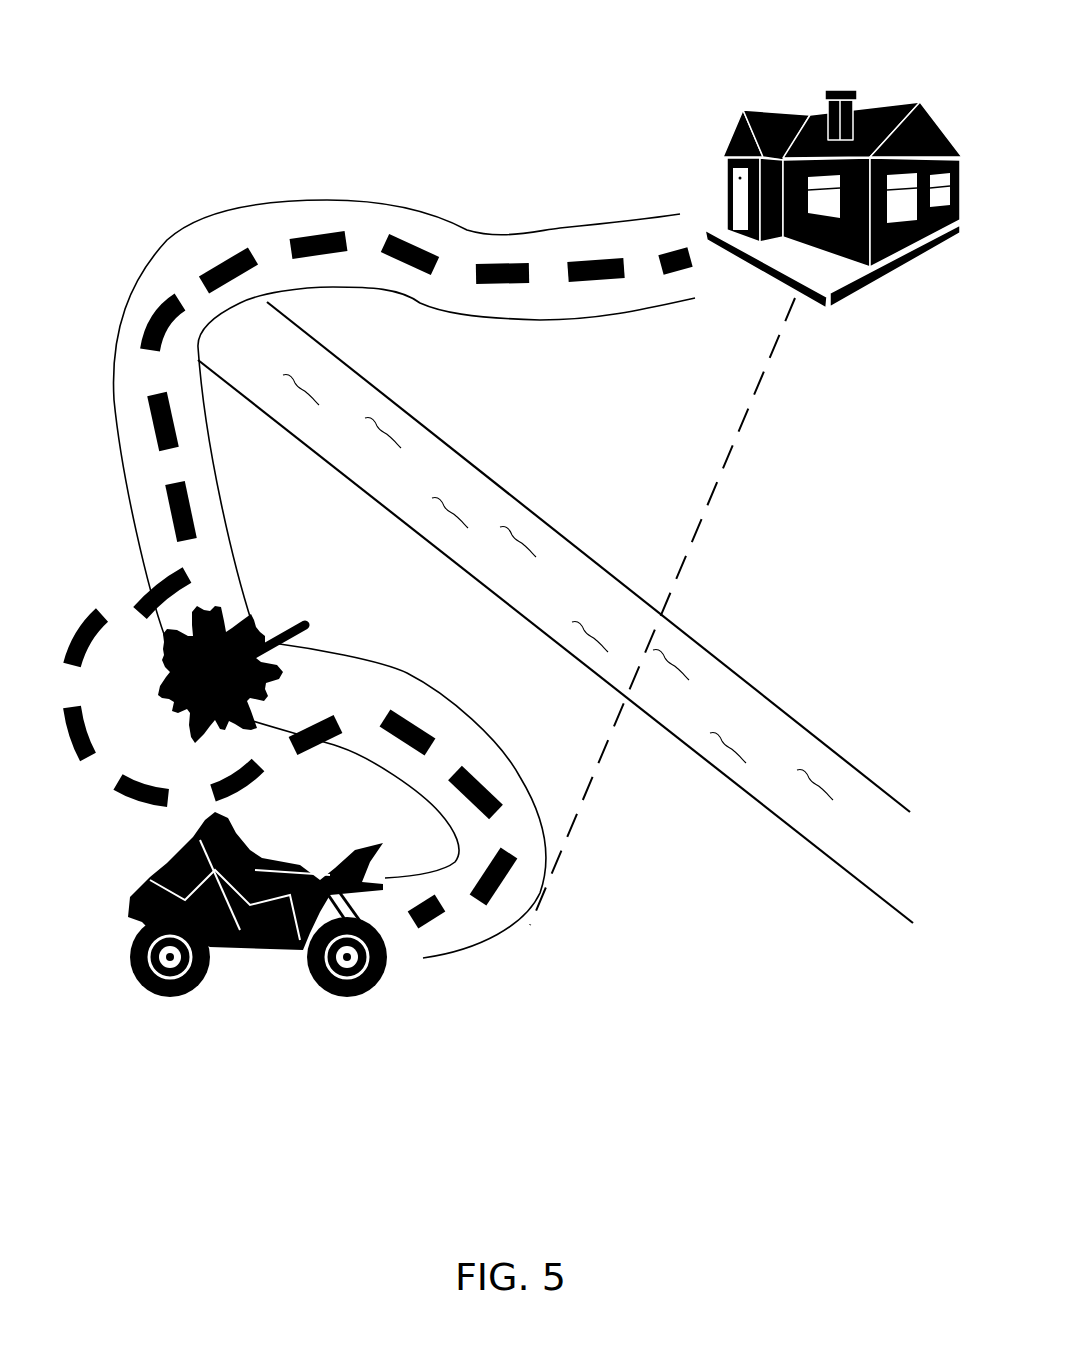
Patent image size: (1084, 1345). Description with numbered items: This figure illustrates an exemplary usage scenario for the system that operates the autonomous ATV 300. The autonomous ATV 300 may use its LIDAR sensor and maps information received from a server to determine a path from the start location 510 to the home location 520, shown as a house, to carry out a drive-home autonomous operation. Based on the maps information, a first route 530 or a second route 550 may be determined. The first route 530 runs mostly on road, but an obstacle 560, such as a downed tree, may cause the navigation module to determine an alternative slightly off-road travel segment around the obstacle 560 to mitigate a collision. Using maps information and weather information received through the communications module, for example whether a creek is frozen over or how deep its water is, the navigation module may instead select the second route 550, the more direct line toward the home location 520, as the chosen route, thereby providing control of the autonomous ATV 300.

The autonomous ATV 300 is at (247, 965).
The start location 510 is at (123, 1013).
The home location 520 is at (742, 100).
The first route 530 is at (68, 753).
The second route 550 is at (683, 563).
The obstacle 560 is at (280, 628).